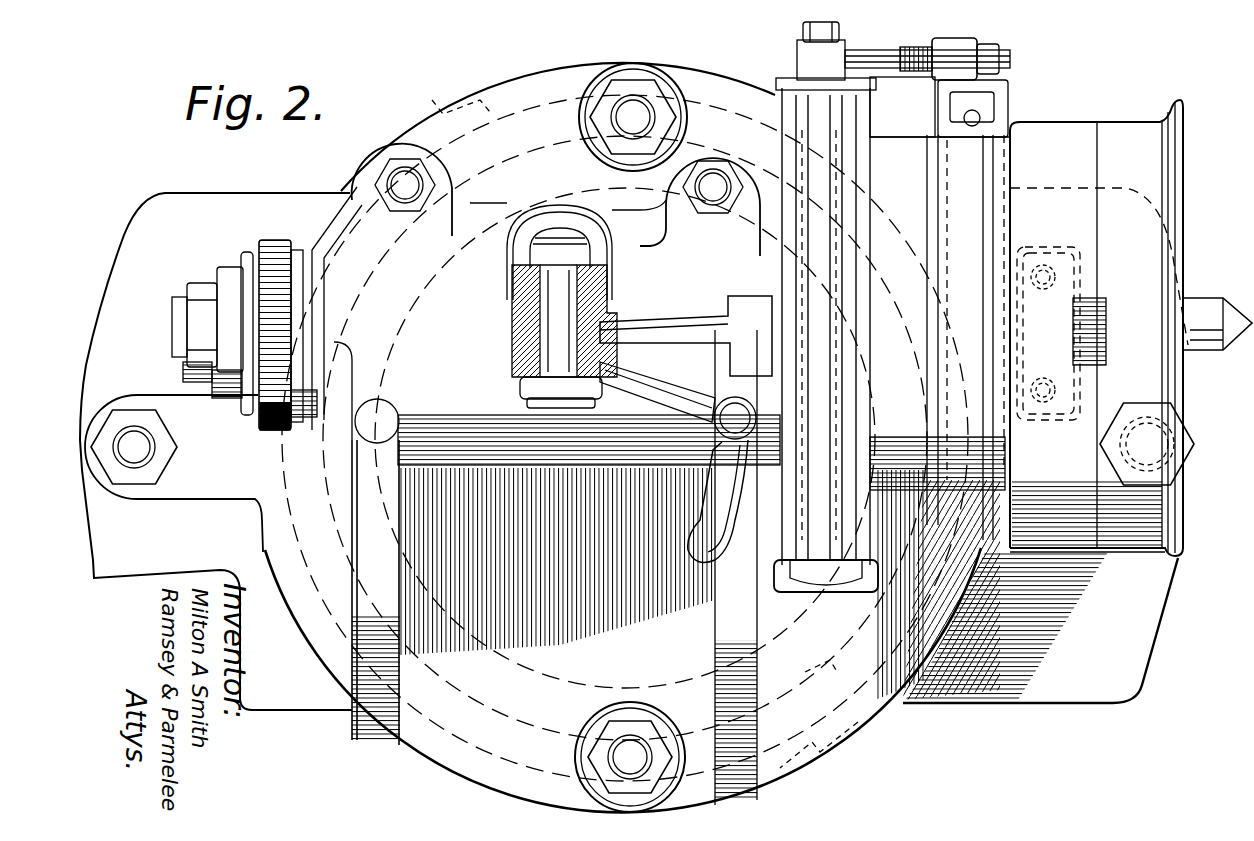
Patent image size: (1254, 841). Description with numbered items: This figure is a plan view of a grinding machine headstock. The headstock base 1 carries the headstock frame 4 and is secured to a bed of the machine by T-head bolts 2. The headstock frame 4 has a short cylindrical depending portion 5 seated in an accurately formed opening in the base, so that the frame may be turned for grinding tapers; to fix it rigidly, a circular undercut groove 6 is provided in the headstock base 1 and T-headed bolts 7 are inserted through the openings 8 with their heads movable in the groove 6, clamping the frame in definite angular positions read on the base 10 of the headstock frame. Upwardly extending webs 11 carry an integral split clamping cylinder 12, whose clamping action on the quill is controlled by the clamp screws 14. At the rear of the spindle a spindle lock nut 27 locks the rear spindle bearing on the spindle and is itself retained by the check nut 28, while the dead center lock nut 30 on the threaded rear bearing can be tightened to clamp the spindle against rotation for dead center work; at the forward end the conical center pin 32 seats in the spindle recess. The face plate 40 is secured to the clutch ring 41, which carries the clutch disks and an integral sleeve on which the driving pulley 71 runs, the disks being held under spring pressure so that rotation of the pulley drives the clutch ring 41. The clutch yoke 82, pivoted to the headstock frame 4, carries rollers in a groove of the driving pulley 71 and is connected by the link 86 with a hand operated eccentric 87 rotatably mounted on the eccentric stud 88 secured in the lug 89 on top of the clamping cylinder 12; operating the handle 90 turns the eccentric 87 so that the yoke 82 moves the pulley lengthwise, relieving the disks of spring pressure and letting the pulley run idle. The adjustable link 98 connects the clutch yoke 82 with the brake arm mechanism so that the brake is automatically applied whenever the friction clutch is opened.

The headstock base 1 is at (1080, 695).
The T-head bolts 2 is at (134, 435).
The headstock frame 4 is at (540, 622).
The short cylindrical depending portion 5 is at (625, 438).
The circular undercut groove 6 is at (535, 95).
The T-headed bolts 7 is at (612, 118).
The openings 8 is at (440, 118).
The base of the headstock frame 10 is at (458, 765).
The upwardly extending webs 11 is at (330, 556).
The split clamping cylinder 12 is at (578, 478).
The clamp screws 14 is at (497, 181).
The spindle lock nut 27 is at (246, 400).
The check nut 28 is at (197, 323).
The dead center lock nut 30 is at (276, 242).
The conical center pin 32 is at (1210, 300).
The face plate 40 is at (1150, 528).
The clutch ring 41 is at (1080, 112).
The driving pulley 71 is at (940, 590).
The clutch yoke 82 is at (835, 295).
The link 86 is at (662, 326).
The hand operated eccentric 87 is at (510, 355).
The eccentric stud 88 is at (560, 380).
The lug 89 is at (520, 262).
The handle 90 is at (695, 533).
The adjustable link 98 is at (908, 62).